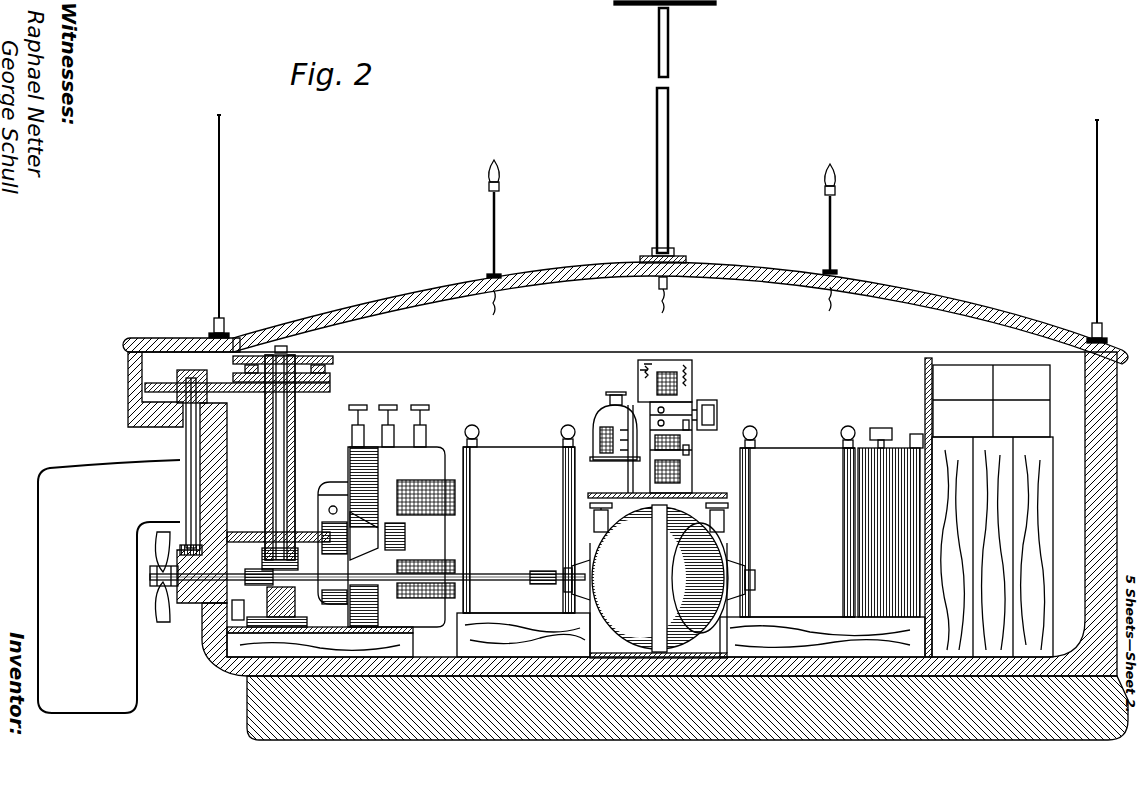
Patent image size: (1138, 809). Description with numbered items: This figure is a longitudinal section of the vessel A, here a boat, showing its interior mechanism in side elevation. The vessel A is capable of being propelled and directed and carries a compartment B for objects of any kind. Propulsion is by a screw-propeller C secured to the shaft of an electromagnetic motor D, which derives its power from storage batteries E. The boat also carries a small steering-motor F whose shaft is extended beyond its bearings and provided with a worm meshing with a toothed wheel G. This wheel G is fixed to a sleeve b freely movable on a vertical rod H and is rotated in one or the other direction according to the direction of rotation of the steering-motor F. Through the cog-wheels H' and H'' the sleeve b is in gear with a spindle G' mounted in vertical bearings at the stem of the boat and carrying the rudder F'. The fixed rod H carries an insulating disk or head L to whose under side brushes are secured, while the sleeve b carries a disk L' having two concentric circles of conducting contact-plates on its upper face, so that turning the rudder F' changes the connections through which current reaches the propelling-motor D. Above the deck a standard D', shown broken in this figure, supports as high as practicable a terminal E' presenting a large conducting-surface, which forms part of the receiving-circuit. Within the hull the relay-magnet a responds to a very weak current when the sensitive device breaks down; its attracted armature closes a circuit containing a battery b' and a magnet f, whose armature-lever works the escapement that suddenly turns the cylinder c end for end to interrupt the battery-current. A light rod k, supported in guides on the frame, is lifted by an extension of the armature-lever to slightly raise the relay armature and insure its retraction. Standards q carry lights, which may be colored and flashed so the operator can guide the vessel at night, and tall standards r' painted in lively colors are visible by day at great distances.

The vessel A is at (626, 501).
The compartment B is at (680, 559).
The screw-propeller C is at (164, 588).
The electromagnetic motor D is at (659, 575).
The storage batteries E is at (659, 521).
The steering-motor F is at (386, 516).
The toothed wheel G is at (253, 515).
The spindle G' is at (178, 466).
The vertical rod H is at (270, 457).
The cog-wheel H' is at (254, 387).
The cog-wheel H'' is at (179, 383).
The insulating disk or head L is at (286, 351).
The disk L' is at (292, 372).
The rudder F' is at (109, 586).
The standard D' is at (665, 160).
The terminal E' is at (665, 11).
The rods / antennae r' is at (659, 229).
The standards q is at (666, 237).
The relay-magnet a is at (665, 376).
The sleeve b is at (367, 465).
The battery b' is at (890, 522).
The cylinder c is at (708, 413).
The magnet f is at (595, 444).
The light rod k is at (671, 447).